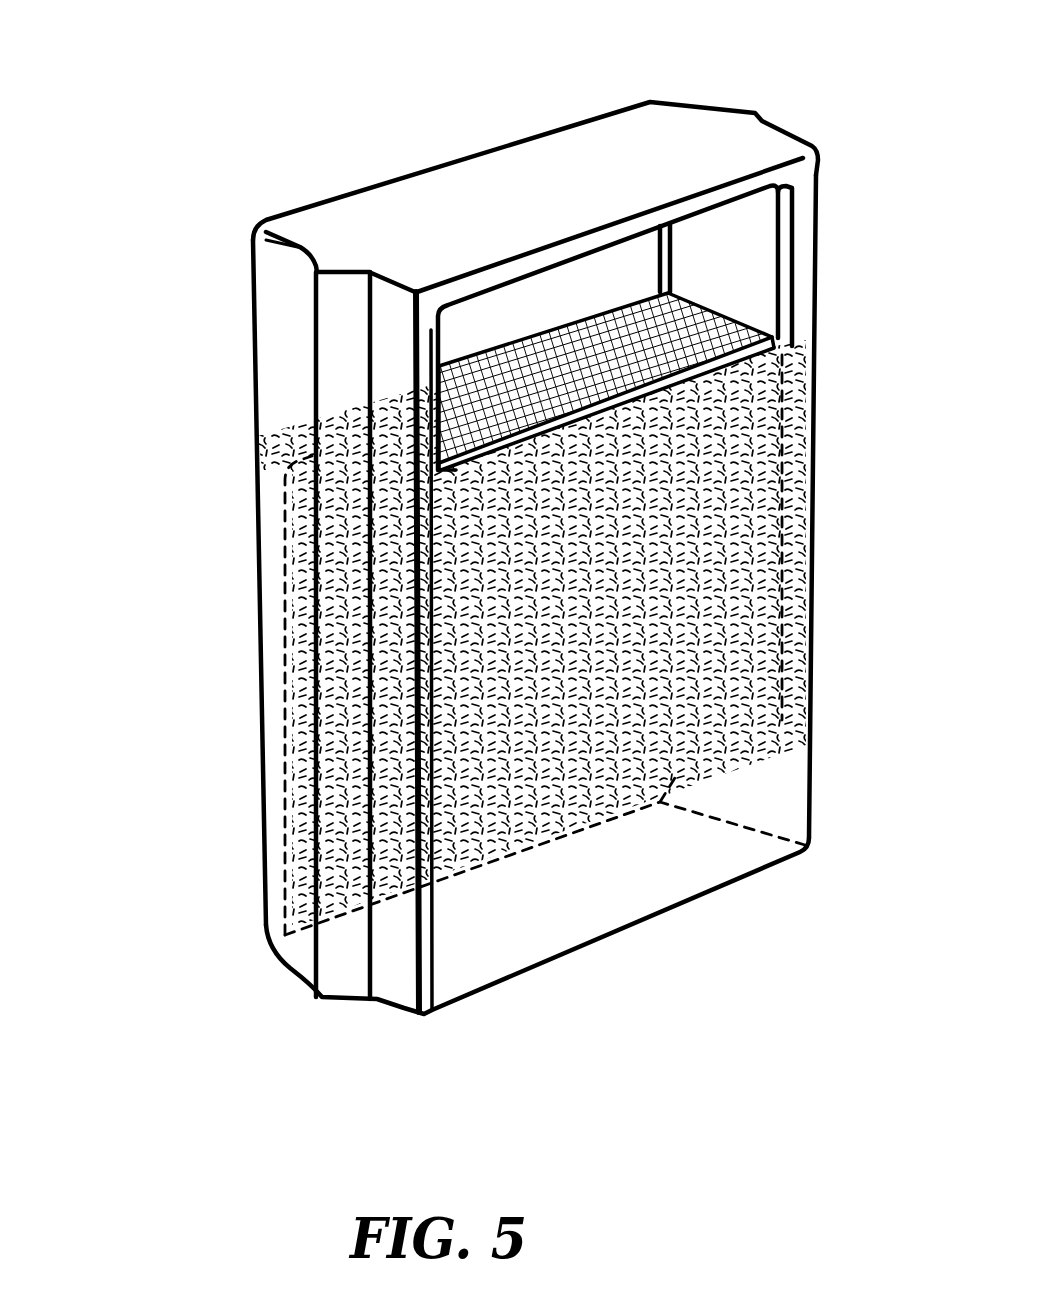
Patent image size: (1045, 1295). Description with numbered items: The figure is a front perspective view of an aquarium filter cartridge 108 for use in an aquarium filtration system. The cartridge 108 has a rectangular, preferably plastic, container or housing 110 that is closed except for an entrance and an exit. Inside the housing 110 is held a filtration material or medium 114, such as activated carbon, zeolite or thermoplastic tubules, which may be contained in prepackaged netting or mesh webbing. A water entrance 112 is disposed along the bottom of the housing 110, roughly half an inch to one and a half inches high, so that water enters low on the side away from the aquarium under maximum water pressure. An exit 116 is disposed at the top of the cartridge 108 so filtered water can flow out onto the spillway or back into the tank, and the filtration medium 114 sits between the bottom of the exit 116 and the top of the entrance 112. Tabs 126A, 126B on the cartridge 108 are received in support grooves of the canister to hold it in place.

The filter cartridge 108 is at (160, 40).
The housing 110 is at (813, 463).
The water entrance 112 is at (278, 840).
The filtration medium 114 is at (707, 622).
The exit 116 is at (788, 288).
The tab 126A is at (321, 993).
The tab 126B is at (757, 113).